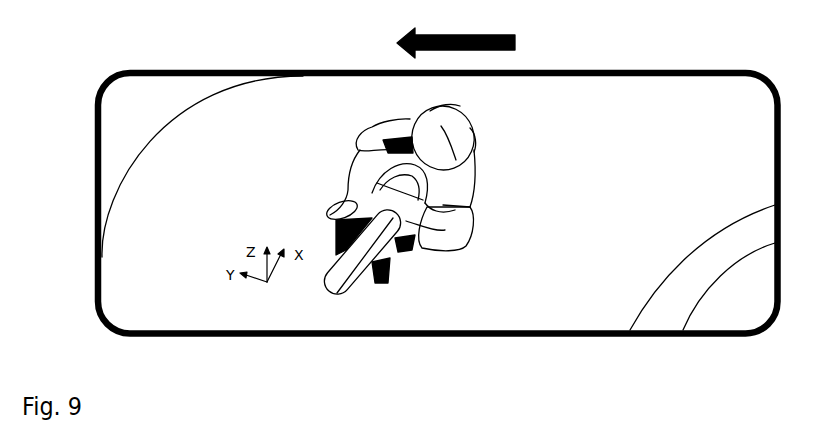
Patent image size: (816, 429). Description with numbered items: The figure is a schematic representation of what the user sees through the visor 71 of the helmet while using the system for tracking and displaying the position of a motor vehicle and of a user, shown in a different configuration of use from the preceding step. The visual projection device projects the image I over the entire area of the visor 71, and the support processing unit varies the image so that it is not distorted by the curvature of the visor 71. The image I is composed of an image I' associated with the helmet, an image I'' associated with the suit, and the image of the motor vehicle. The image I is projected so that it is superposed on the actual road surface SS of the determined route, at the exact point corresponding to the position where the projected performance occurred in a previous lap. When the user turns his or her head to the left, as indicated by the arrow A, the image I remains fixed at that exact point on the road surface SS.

The visor 71 is at (95, 172).
The image I is at (401, 248).
The image associated with the helmet I' is at (397, 77).
The image associated with the suit I'' is at (530, 98).
The arrow A is at (468, 35).
The actual road surface SS is at (522, 318).